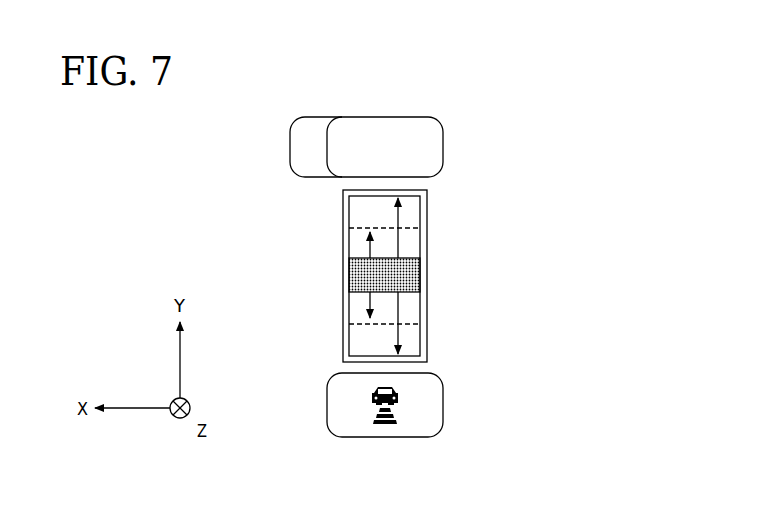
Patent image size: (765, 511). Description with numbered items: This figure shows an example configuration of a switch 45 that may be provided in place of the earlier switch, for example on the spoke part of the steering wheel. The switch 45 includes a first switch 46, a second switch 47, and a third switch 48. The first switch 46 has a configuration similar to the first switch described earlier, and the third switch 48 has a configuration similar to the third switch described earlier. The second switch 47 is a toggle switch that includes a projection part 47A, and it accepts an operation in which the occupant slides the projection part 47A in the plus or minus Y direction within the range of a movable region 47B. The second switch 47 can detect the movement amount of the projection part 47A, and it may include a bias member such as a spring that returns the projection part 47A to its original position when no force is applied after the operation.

The switch 45 is at (472, 103).
The first switch 46 is at (443, 145).
The second switch 47 is at (474, 235).
The projection part 47A is at (347, 276).
The movable region 47B is at (432, 190).
The third switch 48 is at (443, 405).